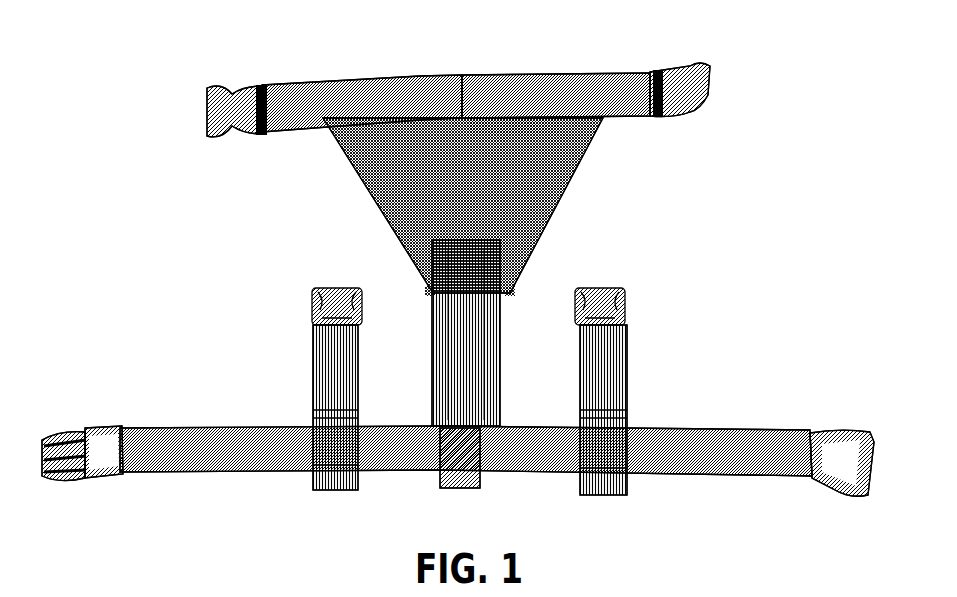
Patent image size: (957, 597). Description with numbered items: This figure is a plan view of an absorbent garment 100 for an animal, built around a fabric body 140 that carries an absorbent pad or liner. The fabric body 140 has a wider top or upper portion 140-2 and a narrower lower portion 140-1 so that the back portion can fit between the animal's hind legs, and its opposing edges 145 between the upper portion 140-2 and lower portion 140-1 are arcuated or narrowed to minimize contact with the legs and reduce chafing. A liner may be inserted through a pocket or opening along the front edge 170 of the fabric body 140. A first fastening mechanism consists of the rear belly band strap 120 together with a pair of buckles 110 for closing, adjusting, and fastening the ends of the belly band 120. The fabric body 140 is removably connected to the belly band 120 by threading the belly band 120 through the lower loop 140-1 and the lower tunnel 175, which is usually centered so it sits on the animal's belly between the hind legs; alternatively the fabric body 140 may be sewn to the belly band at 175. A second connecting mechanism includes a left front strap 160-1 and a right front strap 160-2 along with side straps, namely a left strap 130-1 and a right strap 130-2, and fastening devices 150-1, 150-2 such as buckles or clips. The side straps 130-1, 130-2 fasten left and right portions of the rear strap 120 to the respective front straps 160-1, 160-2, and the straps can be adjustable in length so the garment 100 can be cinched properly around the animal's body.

The absorbent garment 100 is at (152, 106).
The buckles 110 is at (70, 481).
The rear belly band strap 120 is at (222, 469).
The left strap 130-1 is at (321, 382).
The right strap 130-2 is at (617, 382).
The fabric body 140 is at (523, 232).
The lower portion 140-1 is at (497, 402).
The upper portion 140-2 is at (507, 128).
The opposing edges 145 is at (426, 294).
The fastening device 150-1 is at (226, 133).
The fastening device 150-2 is at (700, 118).
The left front strap 160-1 is at (358, 91).
The right front strap 160-2 is at (557, 89).
The front edge 170 is at (464, 72).
The lower loop 175 is at (456, 468).